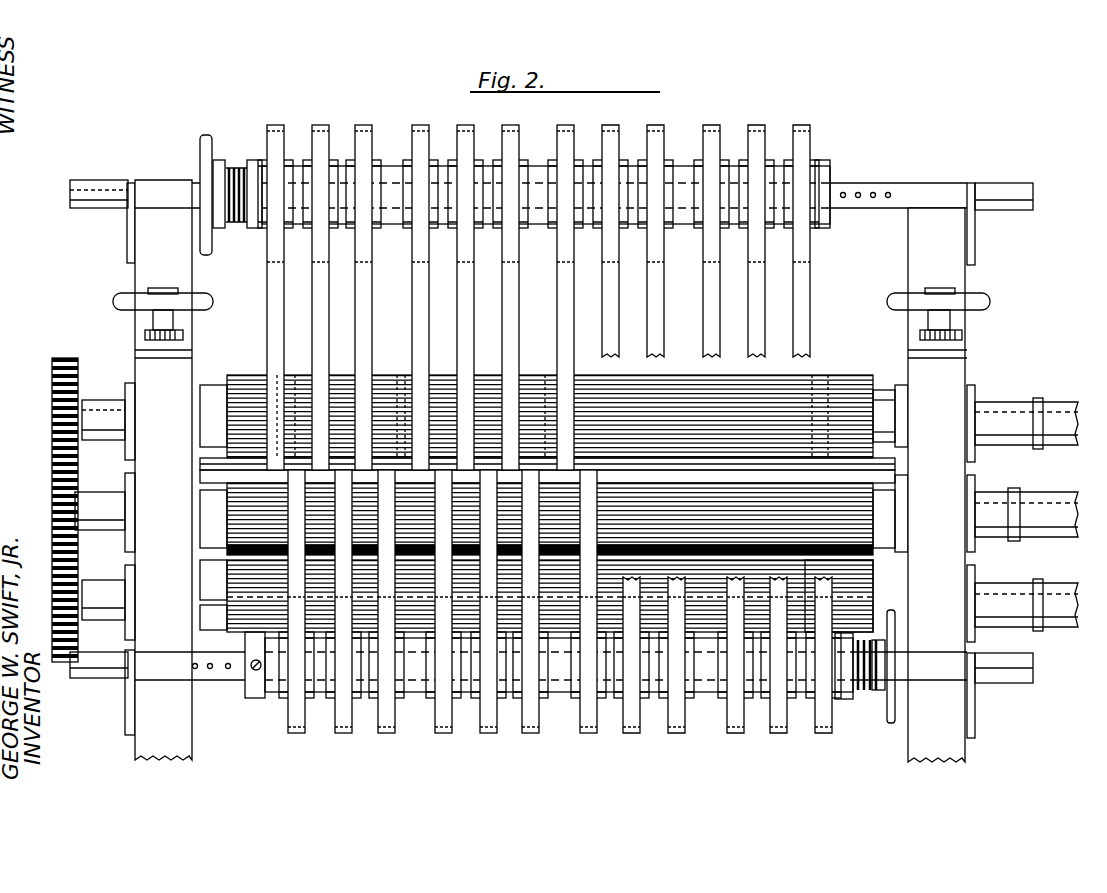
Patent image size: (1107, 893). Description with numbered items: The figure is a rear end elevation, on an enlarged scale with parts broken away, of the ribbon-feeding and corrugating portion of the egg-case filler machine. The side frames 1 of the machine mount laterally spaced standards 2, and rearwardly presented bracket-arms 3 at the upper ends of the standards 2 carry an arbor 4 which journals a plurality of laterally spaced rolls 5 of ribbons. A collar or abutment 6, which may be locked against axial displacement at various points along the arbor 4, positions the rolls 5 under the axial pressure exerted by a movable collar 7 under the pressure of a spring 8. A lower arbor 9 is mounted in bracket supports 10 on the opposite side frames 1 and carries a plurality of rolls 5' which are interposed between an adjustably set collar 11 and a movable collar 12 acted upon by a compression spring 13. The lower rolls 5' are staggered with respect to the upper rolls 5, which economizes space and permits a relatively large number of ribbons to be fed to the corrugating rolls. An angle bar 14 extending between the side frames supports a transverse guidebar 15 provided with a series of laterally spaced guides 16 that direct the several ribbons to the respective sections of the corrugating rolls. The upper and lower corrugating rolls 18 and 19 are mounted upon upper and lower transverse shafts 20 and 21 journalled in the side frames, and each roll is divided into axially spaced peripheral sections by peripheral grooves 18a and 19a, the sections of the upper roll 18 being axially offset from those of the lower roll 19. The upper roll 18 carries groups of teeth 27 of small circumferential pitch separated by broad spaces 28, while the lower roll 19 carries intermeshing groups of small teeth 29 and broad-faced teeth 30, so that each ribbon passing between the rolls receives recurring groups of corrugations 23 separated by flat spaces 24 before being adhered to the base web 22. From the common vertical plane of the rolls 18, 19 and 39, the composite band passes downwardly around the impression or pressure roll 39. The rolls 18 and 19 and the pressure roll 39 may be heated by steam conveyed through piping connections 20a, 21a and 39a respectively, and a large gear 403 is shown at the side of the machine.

The side frames 1 is at (185, 795).
The standards 2 is at (551, 471).
The bracket-arms 3 is at (128, 240).
The arbor 4 is at (1006, 183).
The rolls of ribbons 5 is at (538, 284).
The rolls of ribbons 5' is at (560, 623).
The collar or abutment 6 is at (828, 176).
The movable collar 7 is at (252, 228).
The spring 8 is at (238, 172).
The lower arbor 9 is at (100, 665).
The bracket supports 10 is at (128, 720).
The adjustably set collar 11 is at (257, 700).
The movable collar 12 is at (846, 700).
The compression spring 13 is at (866, 662).
The angle bar 14 is at (195, 500).
The guidebar 15 is at (200, 478).
The guides 16 is at (232, 440).
The upper corrugating roll 18 is at (403, 375).
The peripheral grooves 18a is at (293, 375).
The lower corrugating roll 19 is at (850, 540).
The peripheral grooves 19a is at (828, 552).
The upper transverse shaft 20 is at (100, 400).
The piping connection 20a is at (1058, 410).
The lower transverse shaft 21 is at (95, 496).
The piping connection 21a is at (1048, 500).
The base web or liner sheet 22 is at (250, 598).
The groups of corrugations 23 is at (250, 625).
The flat spaces 24 is at (465, 612).
The teeth 27 is at (545, 385).
The broad space 28 is at (242, 430).
The small teeth 29 is at (232, 548).
The broad-faced teeth 30 is at (252, 556).
The pressure roll 39 is at (233, 660).
The piping connection 39a is at (1058, 622).
The gear 403 is at (52, 453).